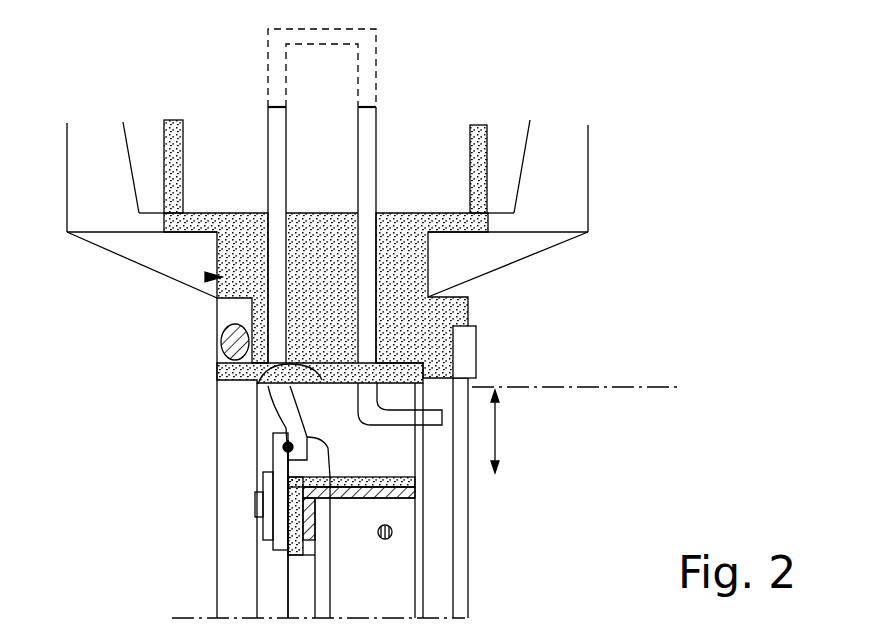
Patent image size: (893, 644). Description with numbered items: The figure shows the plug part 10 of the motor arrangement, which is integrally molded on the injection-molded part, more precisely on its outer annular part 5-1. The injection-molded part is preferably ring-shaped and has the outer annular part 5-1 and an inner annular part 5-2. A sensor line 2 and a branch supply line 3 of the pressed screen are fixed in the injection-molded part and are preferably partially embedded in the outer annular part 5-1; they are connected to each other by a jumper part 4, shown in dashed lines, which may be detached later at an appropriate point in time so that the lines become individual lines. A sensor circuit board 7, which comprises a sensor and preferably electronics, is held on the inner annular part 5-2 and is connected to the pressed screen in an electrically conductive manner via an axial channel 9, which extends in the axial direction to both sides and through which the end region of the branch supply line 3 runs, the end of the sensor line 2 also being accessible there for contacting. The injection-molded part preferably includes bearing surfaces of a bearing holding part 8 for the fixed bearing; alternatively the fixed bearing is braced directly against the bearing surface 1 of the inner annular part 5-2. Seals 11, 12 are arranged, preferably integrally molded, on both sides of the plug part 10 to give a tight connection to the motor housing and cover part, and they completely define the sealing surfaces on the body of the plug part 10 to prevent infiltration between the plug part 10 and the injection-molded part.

The bearing surface 1 is at (300, 555).
The sensor line 2 is at (273, 142).
The branch supply line 3 is at (367, 138).
The jumper part 4 is at (273, 67).
The outer annular part 5-1 is at (300, 392).
The inner annular part 5-2 is at (413, 482).
The sensor circuit board 7 is at (277, 458).
The bearing holding part 8 is at (395, 577).
The channel 9 is at (497, 427).
The plug part 10 is at (206, 277).
The seal 11 is at (222, 337).
The seal 12 is at (465, 347).